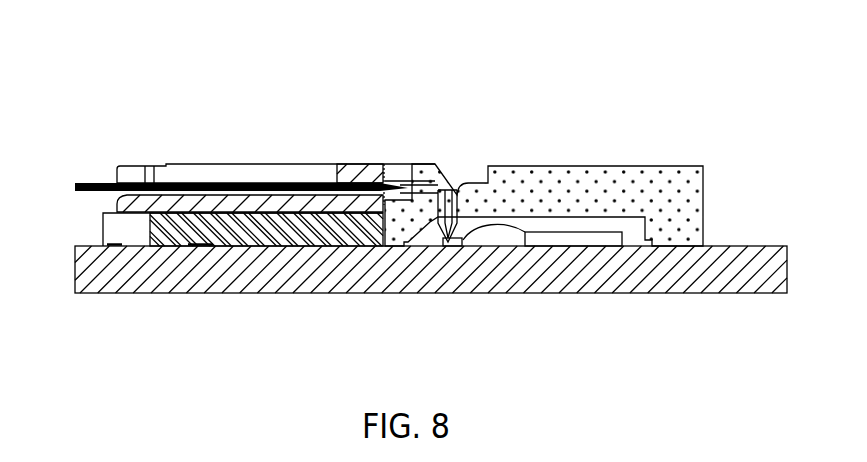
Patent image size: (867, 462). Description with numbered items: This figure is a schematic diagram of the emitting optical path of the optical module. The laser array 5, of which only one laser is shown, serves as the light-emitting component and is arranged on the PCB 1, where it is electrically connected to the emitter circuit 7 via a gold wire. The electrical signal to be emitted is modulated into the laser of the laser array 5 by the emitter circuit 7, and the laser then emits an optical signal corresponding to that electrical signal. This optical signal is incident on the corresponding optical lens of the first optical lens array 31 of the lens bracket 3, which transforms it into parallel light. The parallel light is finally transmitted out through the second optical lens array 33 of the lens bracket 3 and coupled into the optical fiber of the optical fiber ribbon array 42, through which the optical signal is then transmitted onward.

The PCB 1 is at (643, 287).
The lens bracket 3 is at (568, 192).
The laser array 5 is at (452, 243).
The emitter circuit 7 is at (570, 238).
The first optical lens array 31 is at (440, 235).
The second optical lens array 33 is at (410, 180).
The optical fiber ribbon array 42 is at (105, 183).